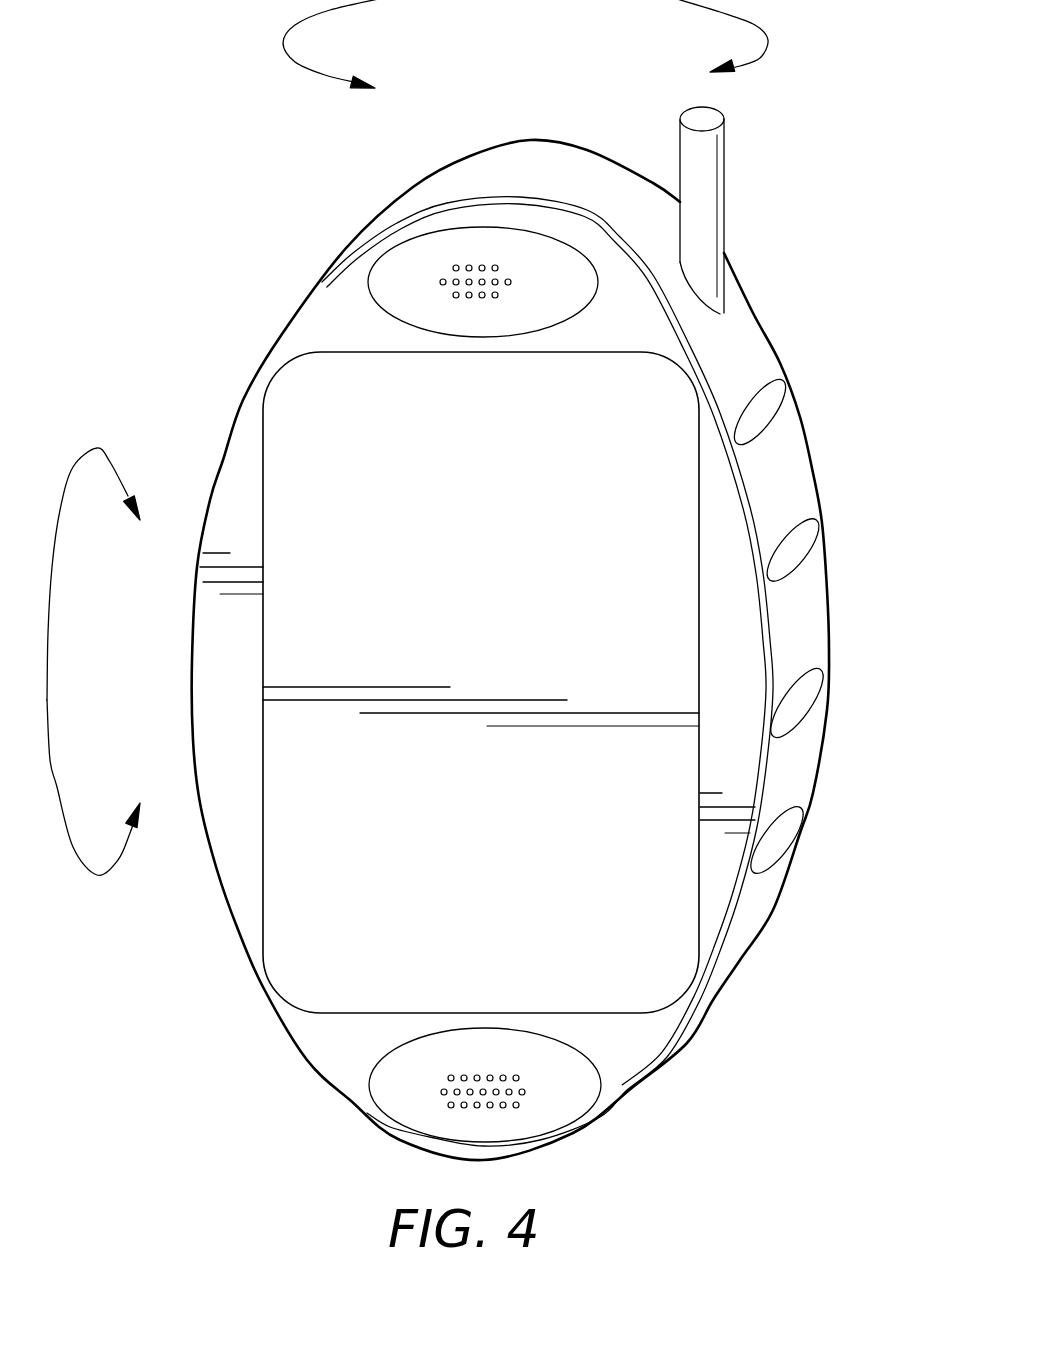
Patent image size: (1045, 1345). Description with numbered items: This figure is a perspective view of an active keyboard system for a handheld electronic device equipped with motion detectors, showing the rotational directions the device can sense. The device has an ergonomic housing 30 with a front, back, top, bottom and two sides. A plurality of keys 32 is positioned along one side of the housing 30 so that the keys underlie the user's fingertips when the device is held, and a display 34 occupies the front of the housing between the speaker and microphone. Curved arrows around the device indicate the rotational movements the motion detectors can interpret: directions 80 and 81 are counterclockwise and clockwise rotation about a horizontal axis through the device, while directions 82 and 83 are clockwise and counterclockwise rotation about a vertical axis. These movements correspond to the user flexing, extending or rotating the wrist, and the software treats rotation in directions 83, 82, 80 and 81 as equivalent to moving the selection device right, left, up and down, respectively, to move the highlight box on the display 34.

The housing 30 is at (752, 663).
The keys 32 is at (768, 385).
The display 34 is at (583, 837).
The rotational direction 80 is at (140, 822).
The rotational direction 81 is at (143, 507).
The rotational direction 82 is at (733, 70).
The rotational direction 83 is at (366, 90).